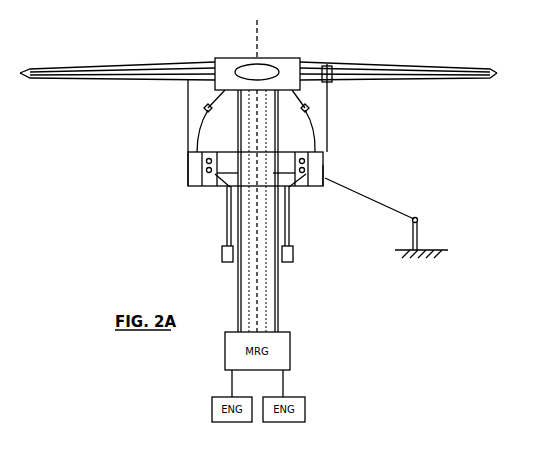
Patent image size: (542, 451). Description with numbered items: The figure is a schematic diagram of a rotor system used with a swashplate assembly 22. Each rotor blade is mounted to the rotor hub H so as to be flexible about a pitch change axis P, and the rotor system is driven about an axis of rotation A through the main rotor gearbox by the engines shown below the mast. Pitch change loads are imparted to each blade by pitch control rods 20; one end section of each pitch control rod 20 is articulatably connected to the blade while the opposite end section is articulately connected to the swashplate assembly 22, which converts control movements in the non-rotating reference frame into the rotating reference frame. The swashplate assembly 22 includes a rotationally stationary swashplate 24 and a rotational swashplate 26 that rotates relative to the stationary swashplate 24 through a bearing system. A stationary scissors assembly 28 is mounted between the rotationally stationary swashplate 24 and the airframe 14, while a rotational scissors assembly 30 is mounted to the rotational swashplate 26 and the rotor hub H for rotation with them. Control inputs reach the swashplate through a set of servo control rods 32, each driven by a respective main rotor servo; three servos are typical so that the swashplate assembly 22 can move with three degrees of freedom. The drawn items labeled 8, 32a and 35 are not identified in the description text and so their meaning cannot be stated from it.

The rotor blade 8 is at (112, 66).
The airframe 14 is at (421, 238).
The pitch control rod 20 is at (188, 115).
The swashplate assembly 22 is at (356, 150).
The rotationally stationary swashplate 24 is at (303, 188).
The rotational swashplate 26 is at (188, 177).
The stationary scissors assembly 28 is at (399, 211).
The rotational scissors assembly 30 is at (305, 122).
The servo control rod 32 is at (226, 212).
The actuator base 32a is at (222, 253).
The pivot joint 35 is at (323, 177).
The axis of rotation A is at (259, 36).
The rotor hub H is at (287, 58).
The pitch change axis P is at (67, 81).